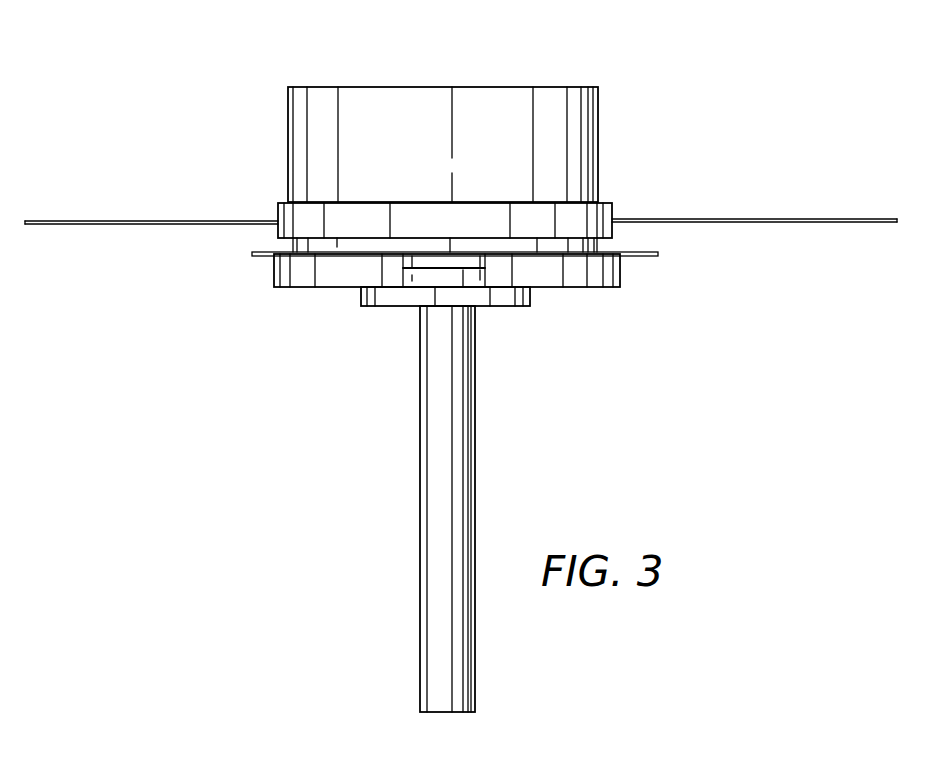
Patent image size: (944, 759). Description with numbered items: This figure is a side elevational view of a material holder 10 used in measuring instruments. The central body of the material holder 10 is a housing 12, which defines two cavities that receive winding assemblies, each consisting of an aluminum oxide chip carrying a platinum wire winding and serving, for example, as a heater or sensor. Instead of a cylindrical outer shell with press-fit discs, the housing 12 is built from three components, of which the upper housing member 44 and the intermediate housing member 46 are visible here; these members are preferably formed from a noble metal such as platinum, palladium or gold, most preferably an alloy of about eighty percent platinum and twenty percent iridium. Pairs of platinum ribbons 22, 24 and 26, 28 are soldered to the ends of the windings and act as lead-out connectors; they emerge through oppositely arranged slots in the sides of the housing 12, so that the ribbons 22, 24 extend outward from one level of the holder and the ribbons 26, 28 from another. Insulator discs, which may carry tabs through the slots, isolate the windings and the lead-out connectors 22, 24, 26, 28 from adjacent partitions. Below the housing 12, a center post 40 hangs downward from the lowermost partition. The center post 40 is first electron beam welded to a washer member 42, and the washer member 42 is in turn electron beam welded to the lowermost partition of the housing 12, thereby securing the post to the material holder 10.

The material holder 10 is at (523, 84).
The housing 12 is at (477, 144).
The platinum ribbon 22 is at (172, 220).
The platinum ribbon 24 is at (757, 223).
The platinum ribbon 26 is at (640, 258).
The platinum ribbon 28 is at (255, 258).
The center post 40 is at (452, 429).
The washer member 42 is at (510, 300).
The upper housing member 44 is at (575, 122).
The intermediate housing member 46 is at (616, 207).